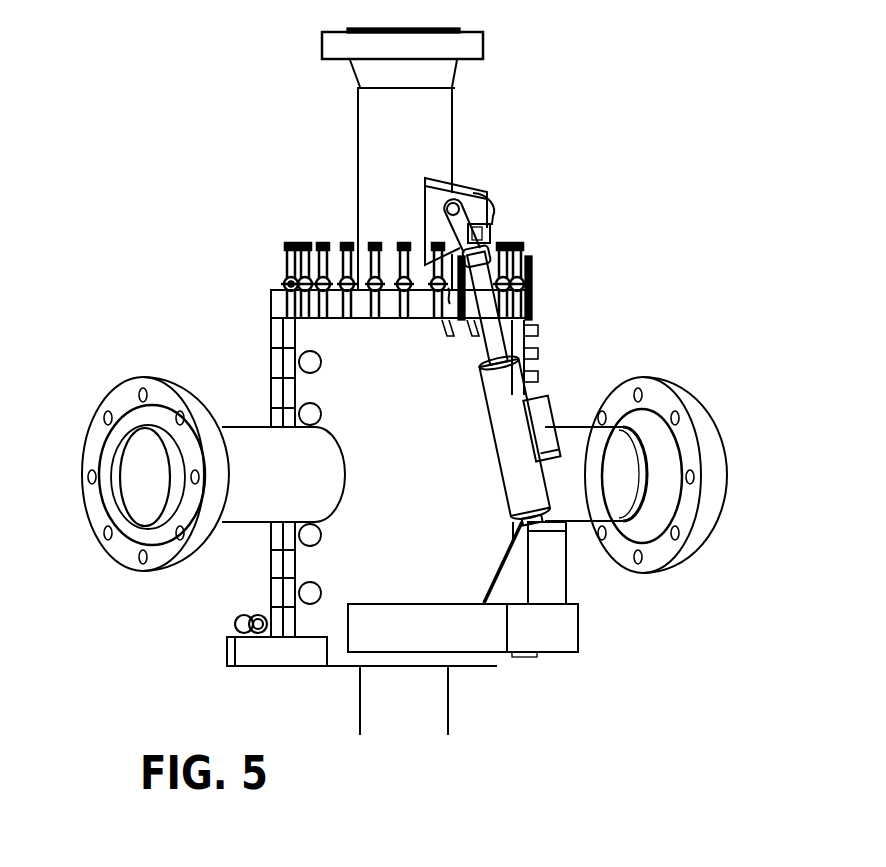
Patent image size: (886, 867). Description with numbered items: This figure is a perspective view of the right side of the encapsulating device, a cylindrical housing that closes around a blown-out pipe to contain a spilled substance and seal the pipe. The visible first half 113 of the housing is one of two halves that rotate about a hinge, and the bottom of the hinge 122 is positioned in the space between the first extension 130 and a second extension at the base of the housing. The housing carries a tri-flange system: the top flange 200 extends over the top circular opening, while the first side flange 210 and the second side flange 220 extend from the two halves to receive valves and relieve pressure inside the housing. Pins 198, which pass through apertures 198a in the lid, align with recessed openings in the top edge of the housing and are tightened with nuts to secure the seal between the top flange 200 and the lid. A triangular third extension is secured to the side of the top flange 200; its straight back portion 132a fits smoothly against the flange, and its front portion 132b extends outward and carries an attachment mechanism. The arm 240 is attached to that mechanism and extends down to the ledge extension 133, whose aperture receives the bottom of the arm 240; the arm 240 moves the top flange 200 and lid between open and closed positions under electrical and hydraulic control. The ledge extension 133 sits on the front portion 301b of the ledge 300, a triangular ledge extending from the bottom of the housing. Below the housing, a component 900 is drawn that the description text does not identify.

The top flange 200 is at (489, 54).
The pins 198 is at (287, 236).
The apertures 198a is at (277, 281).
The back portion 132a is at (443, 198).
The front portion 132b is at (502, 210).
The arm 240 is at (497, 307).
The first side flange 210 is at (184, 372).
The second side flange 220 is at (725, 417).
The first half 113 is at (437, 468).
The bottom of the hinge 122 is at (261, 582).
The first extension 130 is at (277, 670).
The ledge extension 133 is at (572, 572).
The ledge 300 is at (430, 628).
The front portion of the ledge 301b is at (582, 630).
The lower pipe 900 is at (451, 703).